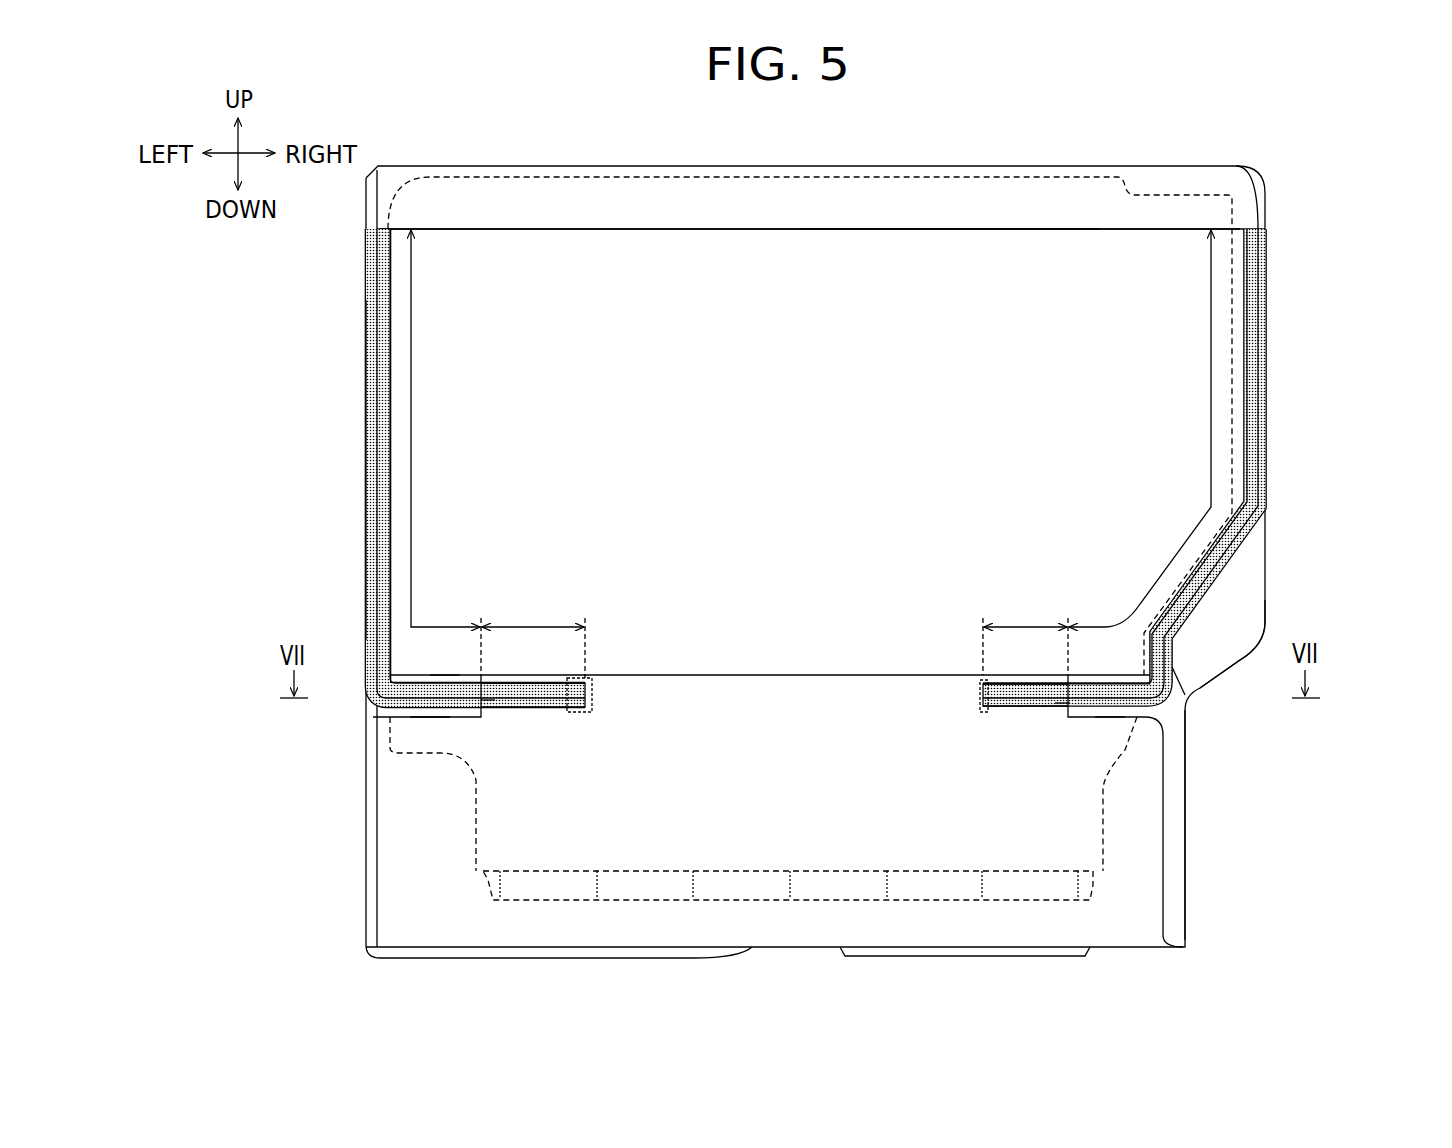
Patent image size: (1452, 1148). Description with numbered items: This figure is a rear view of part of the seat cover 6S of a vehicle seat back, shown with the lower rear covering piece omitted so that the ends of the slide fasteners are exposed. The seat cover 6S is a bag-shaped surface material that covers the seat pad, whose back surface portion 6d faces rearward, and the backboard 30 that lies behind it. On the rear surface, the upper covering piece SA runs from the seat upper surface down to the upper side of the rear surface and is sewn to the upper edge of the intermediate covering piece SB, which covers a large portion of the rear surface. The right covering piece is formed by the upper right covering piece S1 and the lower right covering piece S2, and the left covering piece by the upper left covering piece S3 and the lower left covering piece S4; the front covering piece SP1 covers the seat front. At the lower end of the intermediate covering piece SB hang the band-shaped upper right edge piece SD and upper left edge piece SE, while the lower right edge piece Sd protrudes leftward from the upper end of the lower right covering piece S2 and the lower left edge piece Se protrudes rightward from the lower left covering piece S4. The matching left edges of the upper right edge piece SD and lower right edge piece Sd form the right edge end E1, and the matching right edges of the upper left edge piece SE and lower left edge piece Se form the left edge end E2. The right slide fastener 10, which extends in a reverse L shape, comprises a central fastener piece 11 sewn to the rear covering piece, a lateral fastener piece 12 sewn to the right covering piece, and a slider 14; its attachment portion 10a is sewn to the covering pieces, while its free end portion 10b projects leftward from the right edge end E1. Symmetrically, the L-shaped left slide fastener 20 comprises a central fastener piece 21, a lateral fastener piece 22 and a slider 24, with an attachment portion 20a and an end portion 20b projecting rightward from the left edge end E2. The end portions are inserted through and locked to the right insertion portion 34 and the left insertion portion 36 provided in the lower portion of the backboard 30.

The seat cover 6S is at (1220, 120).
The back surface portion 6d is at (818, 452).
The backboard 30 is at (712, 178).
The upper covering piece SA is at (908, 203).
The intermediate covering piece SB is at (940, 270).
The left slide fastener 20 is at (444, 482).
The central fastener piece 21 is at (373, 366).
The lateral fastener piece 22 is at (383, 478).
The attachment portion 20a is at (412, 420).
The end portion 20b is at (543, 623).
The slider 24 is at (582, 694).
The left insertion portion 36 is at (592, 703).
The right slide fastener 10 is at (1165, 481).
The central fastener piece 11 is at (1265, 437).
The lateral fastener piece 12 is at (1217, 573).
The attachment portion 10a is at (1211, 421).
The end portion 10b is at (1025, 625).
The slider 14 is at (990, 697).
The right insertion portion 34 is at (978, 699).
The upper right covering piece S1 is at (1223, 622).
The lower right covering piece S2 is at (1177, 763).
The upper left covering piece S3 is at (365, 610).
The lower left covering piece S4 is at (373, 714).
The upper right edge piece SD is at (1103, 678).
The lower right edge piece Sd is at (1110, 713).
The upper left edge piece SE is at (443, 678).
The lower left edge piece Se is at (428, 712).
The right edge end E1 is at (1062, 703).
The left edge end E2 is at (487, 700).
The front covering piece SP1 is at (428, 918).